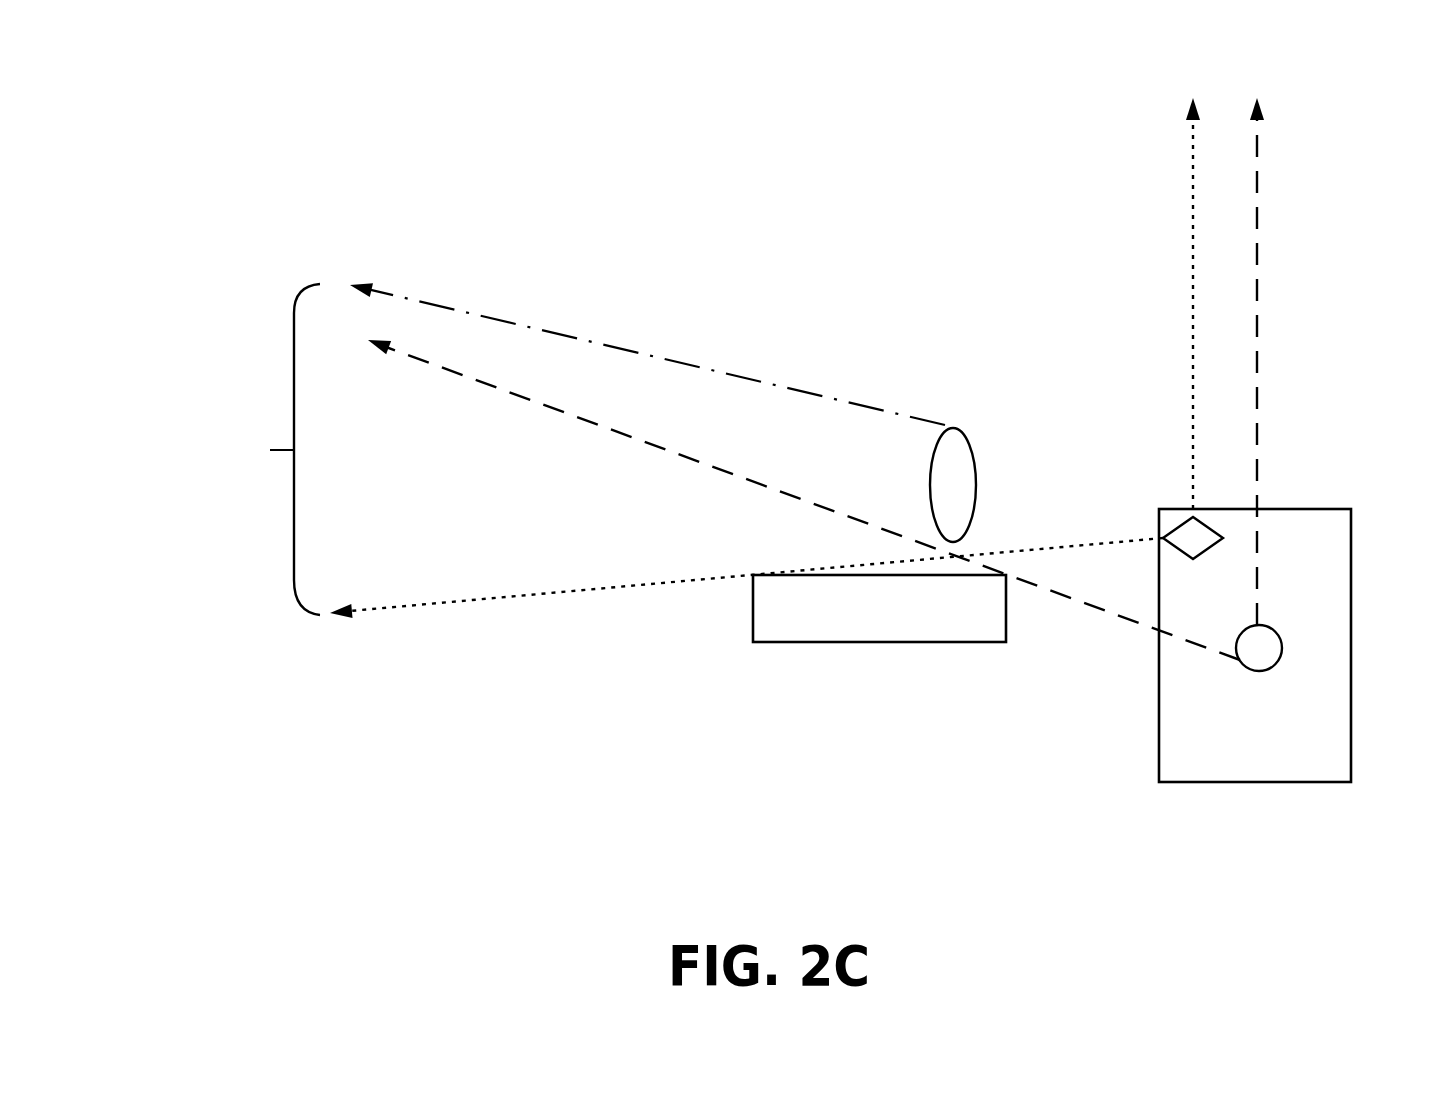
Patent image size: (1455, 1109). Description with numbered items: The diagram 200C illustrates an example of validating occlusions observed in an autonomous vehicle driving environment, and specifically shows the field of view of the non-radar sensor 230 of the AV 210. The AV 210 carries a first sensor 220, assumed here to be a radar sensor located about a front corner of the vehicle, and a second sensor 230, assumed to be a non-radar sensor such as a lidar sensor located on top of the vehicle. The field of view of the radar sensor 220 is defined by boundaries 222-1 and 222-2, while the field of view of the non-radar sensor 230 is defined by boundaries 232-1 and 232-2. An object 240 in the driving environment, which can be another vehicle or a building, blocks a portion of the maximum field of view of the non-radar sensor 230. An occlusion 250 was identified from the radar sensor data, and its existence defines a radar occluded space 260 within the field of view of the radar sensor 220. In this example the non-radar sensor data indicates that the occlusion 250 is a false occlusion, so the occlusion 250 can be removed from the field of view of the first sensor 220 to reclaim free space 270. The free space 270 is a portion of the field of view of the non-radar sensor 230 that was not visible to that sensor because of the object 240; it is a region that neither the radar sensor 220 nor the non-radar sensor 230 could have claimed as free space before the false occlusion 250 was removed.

The diagram 200C is at (262, 106).
The AV 210 is at (1255, 645).
The first sensor 220 is at (1163, 522).
The boundary 222-1 is at (1152, 170).
The boundary 222-2 is at (606, 633).
The second sensor 230 is at (1283, 648).
The boundary 232-1 is at (1298, 170).
The boundary 232-2 is at (1077, 655).
The object 240 is at (879, 608).
The occlusion 250 is at (982, 453).
The radar occluded space 260 is at (208, 449).
The free space 270 is at (501, 527).